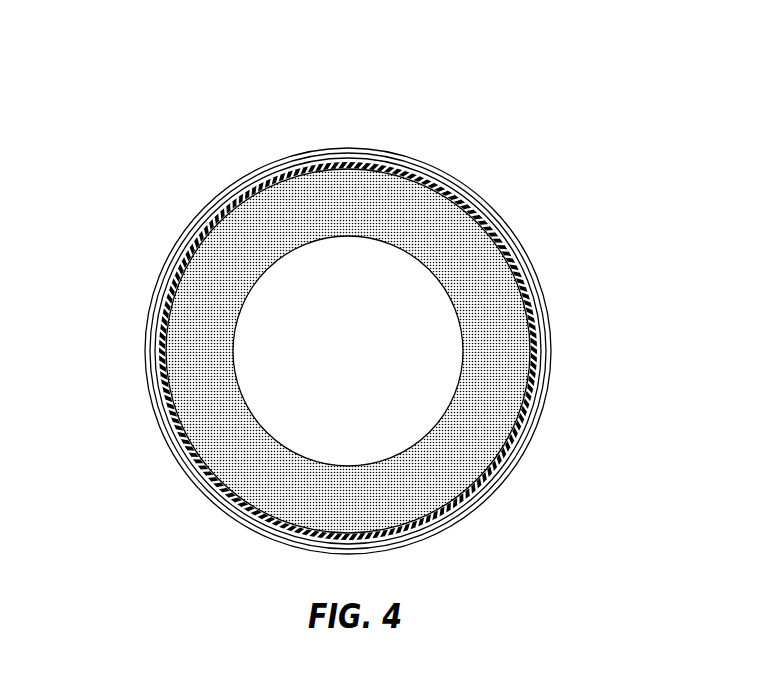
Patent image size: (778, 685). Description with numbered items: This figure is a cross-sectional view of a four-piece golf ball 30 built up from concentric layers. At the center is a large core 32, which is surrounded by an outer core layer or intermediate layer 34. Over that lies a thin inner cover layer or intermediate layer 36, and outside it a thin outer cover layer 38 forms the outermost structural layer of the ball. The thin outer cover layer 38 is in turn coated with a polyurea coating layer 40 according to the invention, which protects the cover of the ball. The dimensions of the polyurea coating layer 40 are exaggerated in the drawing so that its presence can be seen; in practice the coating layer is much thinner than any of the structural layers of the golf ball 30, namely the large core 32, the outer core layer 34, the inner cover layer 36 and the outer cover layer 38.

The four-piece golf ball 30 is at (345, 287).
The large core 32 is at (290, 372).
The outer core layer or intermediate layer 34 is at (503, 332).
The thin inner cover layer or intermediate layer 36 is at (168, 296).
The thin outer cover layer 38 is at (195, 228).
The polyurea coating layer 40 is at (521, 240).